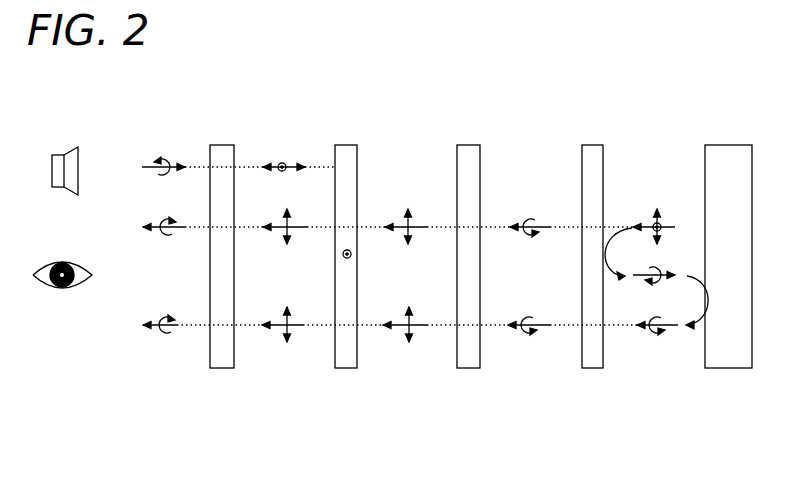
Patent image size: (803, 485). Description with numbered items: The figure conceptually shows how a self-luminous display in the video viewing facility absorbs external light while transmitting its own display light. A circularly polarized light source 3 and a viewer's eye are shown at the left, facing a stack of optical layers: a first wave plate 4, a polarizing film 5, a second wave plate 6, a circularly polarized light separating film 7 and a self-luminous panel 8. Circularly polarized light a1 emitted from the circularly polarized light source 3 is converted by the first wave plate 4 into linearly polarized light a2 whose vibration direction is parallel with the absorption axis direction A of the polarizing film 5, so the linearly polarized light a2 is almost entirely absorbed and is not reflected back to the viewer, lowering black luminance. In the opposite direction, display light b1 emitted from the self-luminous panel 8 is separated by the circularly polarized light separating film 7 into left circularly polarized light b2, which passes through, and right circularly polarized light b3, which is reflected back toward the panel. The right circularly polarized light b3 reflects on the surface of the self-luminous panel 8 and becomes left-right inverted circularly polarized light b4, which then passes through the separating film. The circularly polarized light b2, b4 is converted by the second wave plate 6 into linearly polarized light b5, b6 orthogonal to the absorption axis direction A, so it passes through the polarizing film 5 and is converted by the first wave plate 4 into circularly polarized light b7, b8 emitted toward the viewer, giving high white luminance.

The circularly polarized light source 3 is at (68, 160).
The first wave plate 4 is at (224, 360).
The polarizing film 5 is at (349, 360).
The second wave plate 6 is at (470, 352).
The circularly polarized light separating film 7 is at (592, 352).
The self-luminous panel 8 is at (729, 350).
The circularly polarized light a1 is at (175, 162).
The linearly polarized light a2 is at (295, 163).
The display light b1 is at (651, 220).
The left circularly polarized light b2 is at (523, 220).
The right circularly polarized light b3 is at (662, 267).
The left-right inverted circularly polarized light b4 is at (521, 320).
The linearly polarized light b5 is at (279, 222).
The linearly polarized light b6 is at (281, 310).
The circularly polarized light b7 is at (162, 220).
The circularly polarized light b8 is at (167, 315).
The absorption axis direction A is at (343, 256).